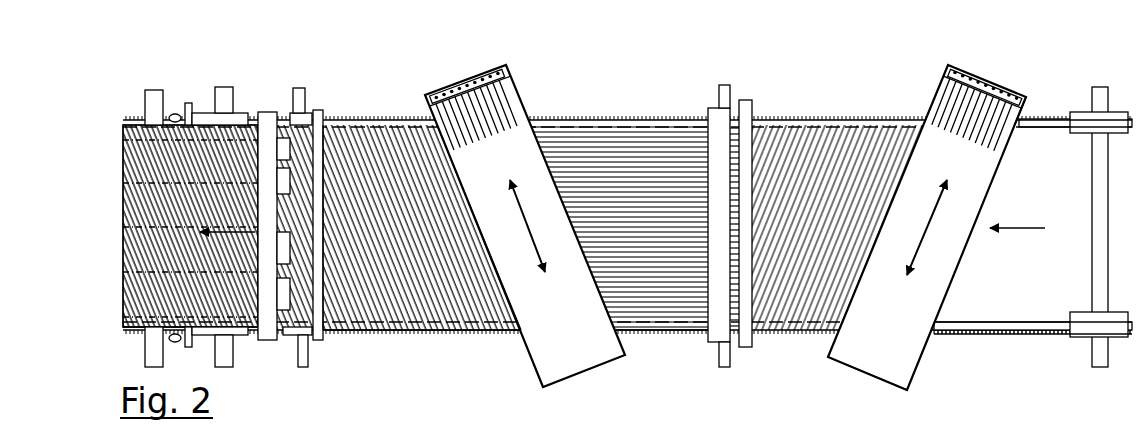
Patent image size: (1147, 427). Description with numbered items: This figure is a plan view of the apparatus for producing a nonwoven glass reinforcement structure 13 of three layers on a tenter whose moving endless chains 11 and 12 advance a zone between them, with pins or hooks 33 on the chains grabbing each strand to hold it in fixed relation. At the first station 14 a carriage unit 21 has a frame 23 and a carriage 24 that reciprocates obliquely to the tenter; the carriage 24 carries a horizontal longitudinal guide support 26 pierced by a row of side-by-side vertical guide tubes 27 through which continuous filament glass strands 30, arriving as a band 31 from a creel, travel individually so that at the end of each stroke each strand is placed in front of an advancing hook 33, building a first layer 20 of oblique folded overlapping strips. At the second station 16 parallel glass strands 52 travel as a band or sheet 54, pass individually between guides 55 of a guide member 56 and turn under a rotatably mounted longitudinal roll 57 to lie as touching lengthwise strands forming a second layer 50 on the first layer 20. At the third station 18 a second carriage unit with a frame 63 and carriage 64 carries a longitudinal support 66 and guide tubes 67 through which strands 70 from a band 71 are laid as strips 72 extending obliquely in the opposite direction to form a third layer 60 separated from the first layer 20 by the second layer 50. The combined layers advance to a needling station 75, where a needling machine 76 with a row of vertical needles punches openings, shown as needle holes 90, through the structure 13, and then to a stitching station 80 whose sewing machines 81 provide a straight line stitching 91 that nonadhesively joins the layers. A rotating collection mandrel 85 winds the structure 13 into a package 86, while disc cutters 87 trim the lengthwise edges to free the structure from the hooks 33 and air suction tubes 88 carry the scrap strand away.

The tenter chain 11 is at (1038, 119).
The tenter chain 12 is at (1041, 335).
The reinforcement structure 13 is at (130, 328).
The first station 14 is at (949, 206).
The second station 16 is at (715, 225).
The third station 18 is at (498, 206).
The first layer 20 is at (842, 125).
The carriage unit 21 is at (930, 354).
The frame 23 is at (962, 273).
The carriage 24 is at (990, 96).
The longitudinal guide support 26 is at (1014, 101).
The guide tubes 27 is at (966, 80).
The continuous filament glass strands 30 is at (985, 118).
The band 31 is at (938, 118).
The hooks 33 is at (620, 125).
The second layer 50 is at (575, 152).
The glass strands 52 is at (682, 330).
The band or sheet 54 is at (650, 165).
The guides 55 is at (732, 138).
The guide member 56 is at (745, 348).
The longitudinal roll 57 is at (714, 345).
The third layer 60 is at (400, 126).
The frame 63 is at (523, 345).
The carriage 64 is at (455, 94).
The longitudinal support 66 is at (491, 80).
The guide tubes 67 is at (441, 112).
The continuous filament glass strands 70 is at (505, 102).
The band 71 is at (433, 125).
The strips 72 is at (428, 322).
The needling station 75 is at (322, 109).
The needling machine 76 is at (330, 130).
The stitching station 80 is at (266, 110).
The sewing machines 81 is at (270, 341).
The collection mandrel 85 is at (150, 92).
The package 86 is at (128, 125).
The disc cutter 87 is at (189, 103).
The air suction tubes 88 is at (176, 114).
The needle holes 90 is at (283, 123).
The stitching 91 is at (135, 150).